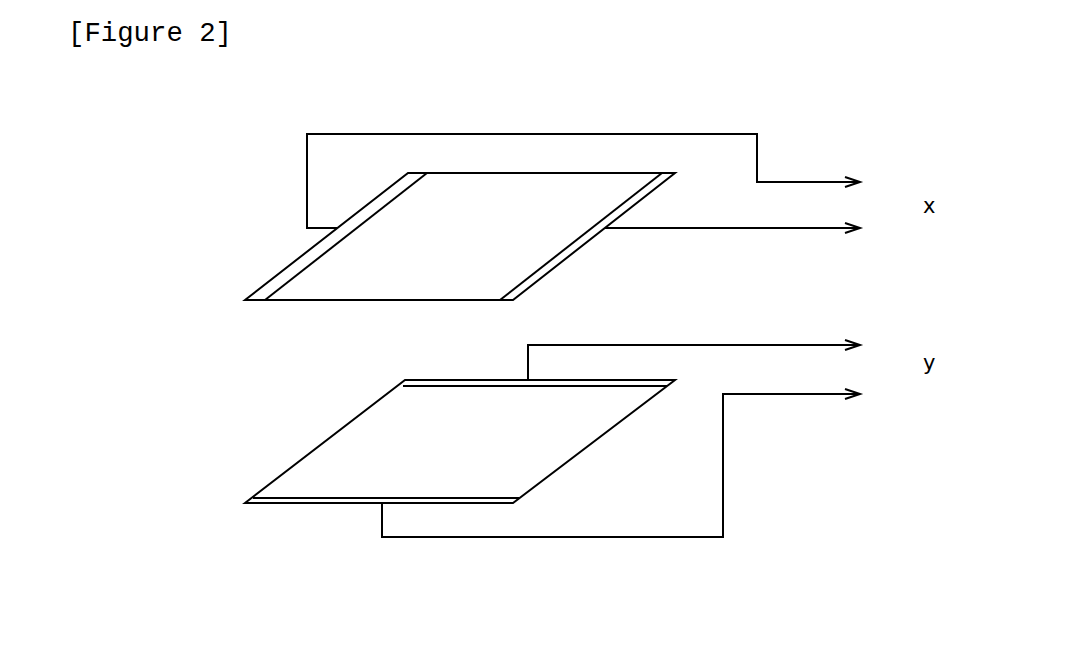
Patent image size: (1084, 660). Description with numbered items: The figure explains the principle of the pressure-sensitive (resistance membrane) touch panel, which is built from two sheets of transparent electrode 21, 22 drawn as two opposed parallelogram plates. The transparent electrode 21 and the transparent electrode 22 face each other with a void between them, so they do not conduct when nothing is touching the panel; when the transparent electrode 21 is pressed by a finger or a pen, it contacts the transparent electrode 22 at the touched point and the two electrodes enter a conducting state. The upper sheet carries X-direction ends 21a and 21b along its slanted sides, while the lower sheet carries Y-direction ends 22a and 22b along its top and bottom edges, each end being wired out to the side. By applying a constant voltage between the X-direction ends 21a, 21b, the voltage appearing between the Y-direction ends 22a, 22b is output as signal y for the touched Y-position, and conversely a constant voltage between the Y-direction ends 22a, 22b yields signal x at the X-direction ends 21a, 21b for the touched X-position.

The transparent electrode 21 is at (303, 300).
The X-direction end of transparent electrode 21a is at (296, 260).
The X-direction end of transparent electrode 21b is at (543, 277).
The transparent electrode 22 is at (538, 485).
The Y-direction end of transparent electrode 22a is at (305, 507).
The Y-direction end of transparent electrode 22b is at (477, 378).